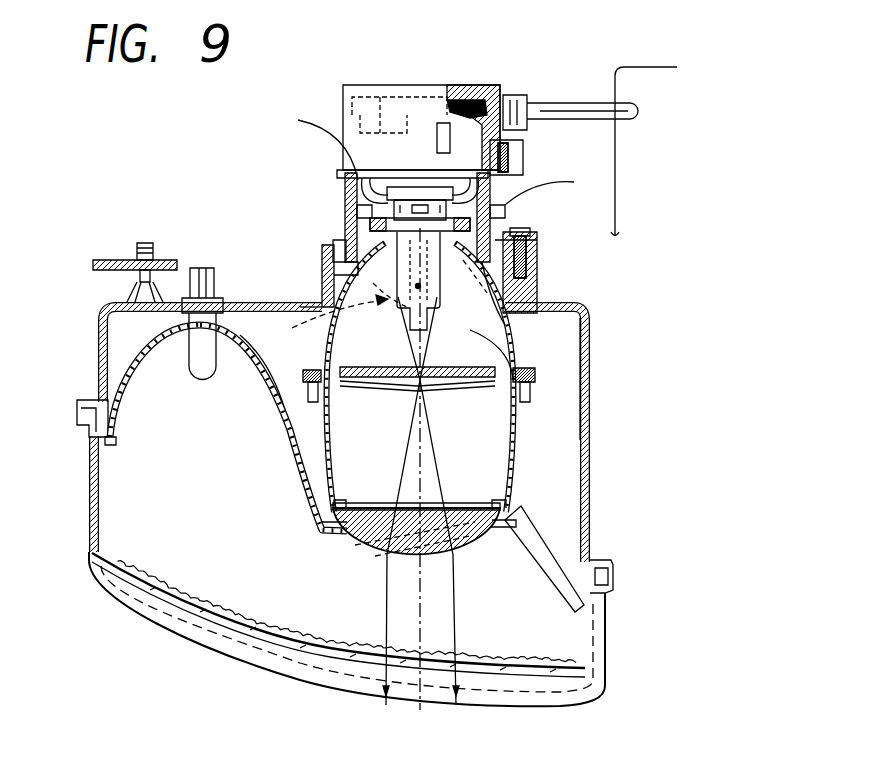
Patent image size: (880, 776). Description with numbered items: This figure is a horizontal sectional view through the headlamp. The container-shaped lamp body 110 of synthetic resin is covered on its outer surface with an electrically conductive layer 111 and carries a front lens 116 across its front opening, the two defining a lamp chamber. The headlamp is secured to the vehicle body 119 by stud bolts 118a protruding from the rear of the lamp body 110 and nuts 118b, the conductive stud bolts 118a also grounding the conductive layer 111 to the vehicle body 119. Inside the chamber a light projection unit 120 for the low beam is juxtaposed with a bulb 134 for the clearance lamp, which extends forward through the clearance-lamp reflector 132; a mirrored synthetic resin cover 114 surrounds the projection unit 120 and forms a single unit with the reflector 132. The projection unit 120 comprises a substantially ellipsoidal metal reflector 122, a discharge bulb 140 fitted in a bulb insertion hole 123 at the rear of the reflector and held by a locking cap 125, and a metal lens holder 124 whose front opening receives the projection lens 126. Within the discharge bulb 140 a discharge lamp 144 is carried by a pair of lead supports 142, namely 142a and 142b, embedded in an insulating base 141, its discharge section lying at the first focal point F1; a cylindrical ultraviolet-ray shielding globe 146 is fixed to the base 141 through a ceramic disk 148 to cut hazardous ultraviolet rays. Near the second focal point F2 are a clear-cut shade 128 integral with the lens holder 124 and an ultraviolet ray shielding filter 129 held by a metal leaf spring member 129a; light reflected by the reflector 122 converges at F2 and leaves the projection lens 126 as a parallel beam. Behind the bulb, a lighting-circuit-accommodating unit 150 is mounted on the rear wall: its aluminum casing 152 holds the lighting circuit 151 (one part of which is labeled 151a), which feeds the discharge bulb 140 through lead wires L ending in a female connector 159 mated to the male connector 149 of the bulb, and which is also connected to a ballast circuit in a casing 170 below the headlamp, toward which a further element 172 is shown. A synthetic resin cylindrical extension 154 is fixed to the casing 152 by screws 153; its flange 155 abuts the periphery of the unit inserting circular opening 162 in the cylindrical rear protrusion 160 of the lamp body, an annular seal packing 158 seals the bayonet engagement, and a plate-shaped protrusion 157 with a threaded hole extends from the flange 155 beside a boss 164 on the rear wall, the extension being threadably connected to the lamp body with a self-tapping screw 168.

The lamp body 110 is at (613, 372).
The electrically conductive layer 111 is at (590, 432).
The cover 114 is at (550, 580).
The front lens 116 is at (215, 672).
The stud bolts 118a is at (145, 240).
The nuts 118b is at (130, 255).
The vehicle body 119 is at (110, 272).
The light projection unit 120 is at (522, 441).
The reflector 122 is at (590, 352).
The bulb insertion hole 123 is at (333, 260).
The lens holder 124 is at (512, 468).
The locking cap 125 is at (350, 212).
The projection lens 126 is at (470, 540).
The clear-cut shade 128 is at (378, 395).
The ultraviolet ray shielding filter 129 is at (285, 395).
The metal leaf spring member 129a is at (590, 398).
The reflector for the clearance lamp 132 is at (125, 362).
The light bulb for the clearance lamp 134 is at (195, 377).
The discharge bulb 140 is at (283, 360).
The insulating base 141 is at (345, 175).
The lead supports 142 is at (418, 281).
The lead support 142a is at (460, 358).
The lead support 142b is at (540, 292).
The discharge lamp 144 is at (325, 325).
The ultraviolet-ray shielding globe 146 is at (498, 318).
The ceramic disk 148 is at (362, 195).
The male connector 149 is at (432, 190).
The lighting-circuit-accommodating unit 150 is at (346, 84).
The lighting circuit 151 is at (355, 112).
The terminal 151a is at (456, 92).
The aluminum casing 152 is at (449, 98).
The screws 153 is at (520, 165).
The cylindrical extension 154 is at (505, 212).
The flange 155 is at (370, 225).
The plate-shaped protrusion 157 is at (615, 233).
The annular seal packing 158 is at (333, 245).
The female connector 159 is at (398, 190).
The cylindrical rear protrusion 160 is at (322, 296).
The unit inserting circular opening 162 is at (525, 280).
The boss 164 is at (537, 262).
The self-tapping screw 168 is at (530, 240).
The casing 170 is at (677, 67).
The connector terminal 172 is at (563, 100).
The lead wires L is at (436, 154).
The first focal point F1 is at (402, 303).
The second focal point F2 is at (432, 392).